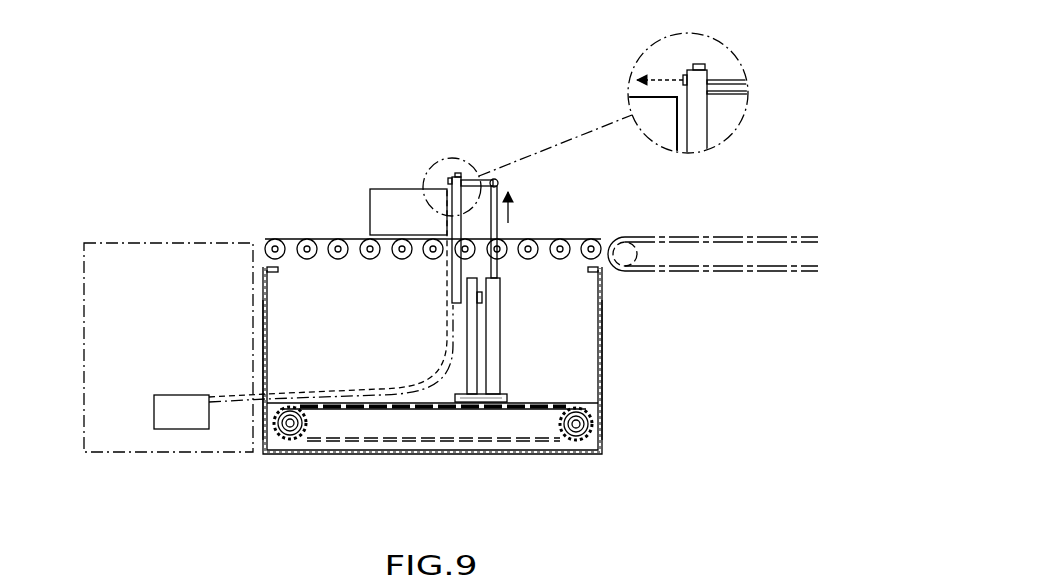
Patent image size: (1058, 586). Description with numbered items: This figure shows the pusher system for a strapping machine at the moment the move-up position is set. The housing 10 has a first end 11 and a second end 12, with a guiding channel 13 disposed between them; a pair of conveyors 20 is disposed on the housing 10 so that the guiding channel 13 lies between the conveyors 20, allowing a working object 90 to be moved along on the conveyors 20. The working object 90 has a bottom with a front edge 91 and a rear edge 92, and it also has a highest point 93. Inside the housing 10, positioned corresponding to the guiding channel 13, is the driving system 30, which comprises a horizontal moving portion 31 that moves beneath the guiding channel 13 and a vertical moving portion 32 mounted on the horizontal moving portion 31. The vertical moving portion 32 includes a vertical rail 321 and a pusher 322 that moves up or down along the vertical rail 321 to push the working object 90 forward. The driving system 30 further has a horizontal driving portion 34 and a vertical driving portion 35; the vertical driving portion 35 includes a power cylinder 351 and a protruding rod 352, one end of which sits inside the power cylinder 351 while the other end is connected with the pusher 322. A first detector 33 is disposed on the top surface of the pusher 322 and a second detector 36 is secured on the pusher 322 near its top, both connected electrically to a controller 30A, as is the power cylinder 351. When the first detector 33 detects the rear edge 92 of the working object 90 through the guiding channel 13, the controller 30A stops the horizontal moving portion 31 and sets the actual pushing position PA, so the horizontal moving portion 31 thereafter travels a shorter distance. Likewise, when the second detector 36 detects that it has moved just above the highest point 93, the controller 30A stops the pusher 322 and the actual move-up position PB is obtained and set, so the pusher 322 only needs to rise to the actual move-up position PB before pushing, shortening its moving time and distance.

The housing 10 is at (604, 428).
The first end 11 is at (603, 385).
The second end 12 is at (264, 426).
The guiding channel 13 is at (598, 268).
The pair of conveyors 20 is at (303, 234).
The driving system 30 is at (196, 431).
The controller 30A is at (160, 420).
The horizontal moving portion 31 is at (508, 395).
The vertical moving portion 32 is at (388, 336).
The vertical rail 321 is at (469, 330).
The pusher 322 is at (458, 293).
The first detector 33 is at (700, 67).
The horizontal driving portion 34 is at (301, 438).
The vertical driving portion 35 is at (610, 290).
The power cylinder 351 is at (500, 332).
The protruding rod 352 is at (498, 265).
The second detector 36 is at (685, 80).
The working object 90 is at (497, 185).
The front edge 91 is at (370, 225).
The rear edge 92 is at (471, 183).
The highest point 93 is at (451, 208).
The actual pushing position PA is at (499, 402).
The actual move-up position PB is at (704, 80).